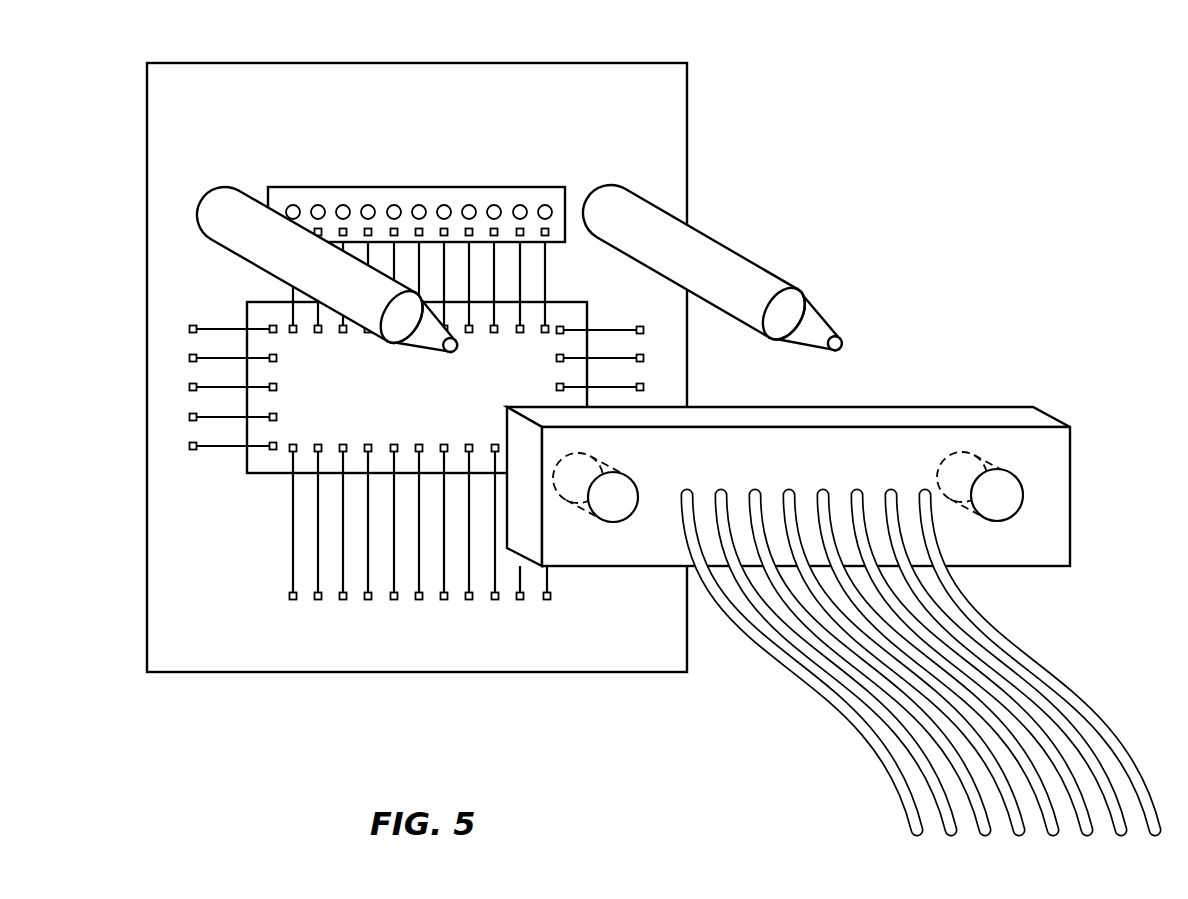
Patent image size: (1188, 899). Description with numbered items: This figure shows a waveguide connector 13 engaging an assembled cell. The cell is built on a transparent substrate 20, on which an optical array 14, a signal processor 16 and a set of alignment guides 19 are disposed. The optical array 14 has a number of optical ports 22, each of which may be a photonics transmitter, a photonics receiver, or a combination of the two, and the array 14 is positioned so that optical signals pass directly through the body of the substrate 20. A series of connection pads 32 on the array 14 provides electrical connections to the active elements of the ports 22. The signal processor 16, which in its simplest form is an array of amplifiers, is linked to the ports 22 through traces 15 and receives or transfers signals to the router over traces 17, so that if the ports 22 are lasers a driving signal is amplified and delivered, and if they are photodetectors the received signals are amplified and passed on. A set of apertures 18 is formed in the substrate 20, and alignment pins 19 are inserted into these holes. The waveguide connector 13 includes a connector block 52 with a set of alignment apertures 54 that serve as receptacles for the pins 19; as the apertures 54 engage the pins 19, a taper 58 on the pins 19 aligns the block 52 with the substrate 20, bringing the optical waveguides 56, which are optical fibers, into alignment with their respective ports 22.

The waveguide connector 13 is at (839, 591).
The optical array 14 is at (450, 122).
The traces 15 is at (575, 283).
The signal processor 16 is at (265, 475).
The traces 17 is at (293, 560).
The apertures 18 is at (213, 187).
The alignment guides 19 is at (744, 273).
The transparent substrate 20 is at (243, 62).
The optical ports 22 is at (494, 204).
The connection pads 32 is at (568, 232).
The connector block 52 is at (788, 536).
The alignment apertures 54 is at (617, 522).
The optical waveguides 56 is at (817, 682).
The taper 58 is at (812, 330).